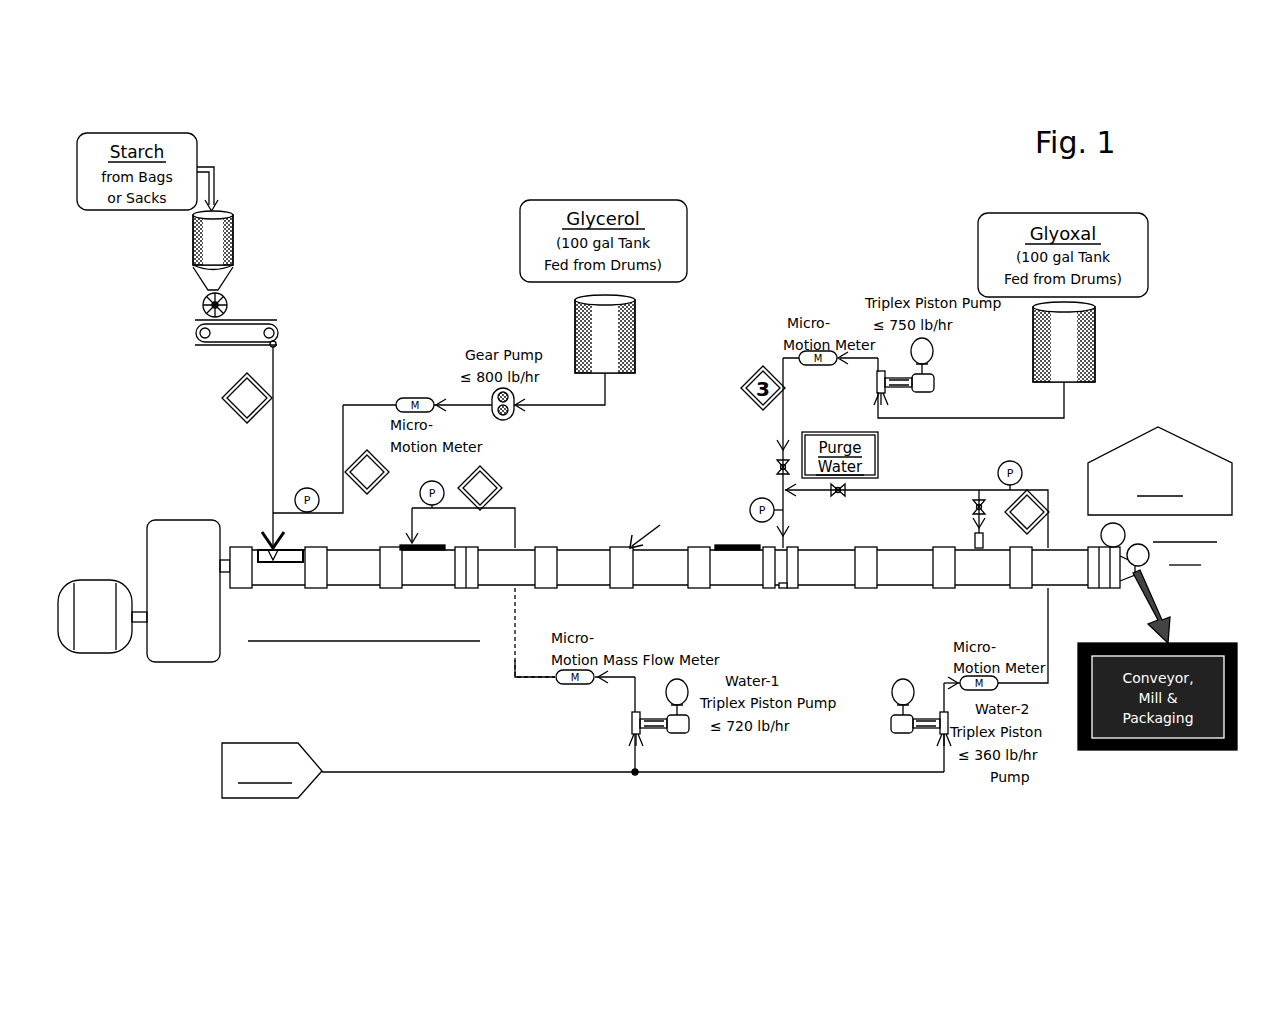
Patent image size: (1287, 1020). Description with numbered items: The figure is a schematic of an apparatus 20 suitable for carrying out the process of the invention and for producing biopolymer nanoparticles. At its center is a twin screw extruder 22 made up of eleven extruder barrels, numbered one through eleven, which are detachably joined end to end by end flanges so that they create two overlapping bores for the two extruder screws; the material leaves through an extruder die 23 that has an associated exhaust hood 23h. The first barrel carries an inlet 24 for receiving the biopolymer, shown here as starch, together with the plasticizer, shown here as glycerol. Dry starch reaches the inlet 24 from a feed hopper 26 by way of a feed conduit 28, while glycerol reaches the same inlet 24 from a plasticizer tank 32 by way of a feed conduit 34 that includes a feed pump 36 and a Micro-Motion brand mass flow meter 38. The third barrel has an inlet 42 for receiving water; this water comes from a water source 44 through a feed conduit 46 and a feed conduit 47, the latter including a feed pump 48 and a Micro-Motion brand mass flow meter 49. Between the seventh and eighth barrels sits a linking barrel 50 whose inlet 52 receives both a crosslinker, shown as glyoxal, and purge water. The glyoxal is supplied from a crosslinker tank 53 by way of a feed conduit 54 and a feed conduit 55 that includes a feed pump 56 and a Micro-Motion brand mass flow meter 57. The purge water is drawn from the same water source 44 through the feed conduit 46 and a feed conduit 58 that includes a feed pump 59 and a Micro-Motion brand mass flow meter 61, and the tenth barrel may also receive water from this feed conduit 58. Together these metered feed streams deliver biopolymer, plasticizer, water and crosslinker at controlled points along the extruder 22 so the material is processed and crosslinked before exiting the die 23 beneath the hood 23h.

The apparatus 20 is at (797, 188).
The twin screw extruder 22 is at (584, 524).
The extruder die 23 is at (1128, 598).
The exhaust hood 23h is at (1178, 452).
The inlet 24 is at (285, 552).
The feed hopper 26 is at (240, 247).
The feed conduit 28 is at (276, 375).
The plasticizer tank 32 is at (636, 340).
The feed conduit 34 is at (553, 406).
The feed pump 36 is at (508, 413).
The Micro-Motion brand mass flow meter 38 is at (401, 396).
The inlet 42 is at (430, 548).
The water source 44 is at (295, 752).
The feed conduit 46 is at (410, 771).
The feed conduit 47 is at (540, 680).
The feed pump 48 is at (688, 732).
The Micro-Motion brand mass flow meter 49 is at (584, 684).
The linking barrel 50 is at (782, 588).
The inlet 52 is at (790, 551).
The crosslinker tank 53 is at (1098, 348).
The feed conduit 54 is at (785, 518).
The feed conduit 55 is at (943, 415).
The feed pump 56 is at (934, 352).
The Micro-Motion brand mass flow meter 57 is at (813, 366).
The feed conduit 58 is at (930, 490).
The feed pump 59 is at (890, 733).
The Micro-Motion brand mass flow meter 61 is at (958, 680).